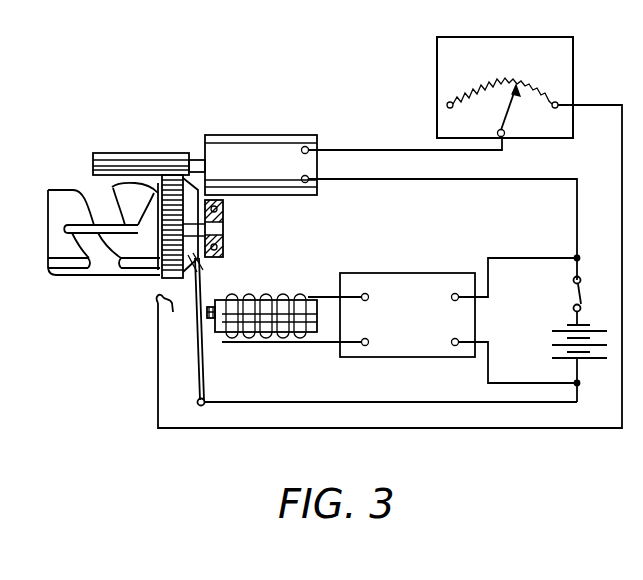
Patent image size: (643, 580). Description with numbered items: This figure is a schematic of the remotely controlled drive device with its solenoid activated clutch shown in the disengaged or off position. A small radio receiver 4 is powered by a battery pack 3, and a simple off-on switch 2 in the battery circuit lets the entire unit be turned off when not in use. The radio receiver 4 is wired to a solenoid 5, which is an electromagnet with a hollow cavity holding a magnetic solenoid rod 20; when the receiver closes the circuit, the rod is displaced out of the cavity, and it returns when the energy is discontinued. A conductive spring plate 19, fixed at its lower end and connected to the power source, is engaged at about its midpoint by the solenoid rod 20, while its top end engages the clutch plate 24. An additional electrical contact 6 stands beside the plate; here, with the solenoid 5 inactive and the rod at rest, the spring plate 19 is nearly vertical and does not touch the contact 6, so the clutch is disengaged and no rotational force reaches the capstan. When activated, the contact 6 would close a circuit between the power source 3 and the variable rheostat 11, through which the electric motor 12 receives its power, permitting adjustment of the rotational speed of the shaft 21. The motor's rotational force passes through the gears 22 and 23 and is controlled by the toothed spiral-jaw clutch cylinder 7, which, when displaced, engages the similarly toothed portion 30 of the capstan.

The off-on switch 2 is at (573, 294).
The battery pack 3 is at (595, 360).
The radio receiver 4 is at (415, 273).
The solenoid 5 is at (265, 304).
The electrical contact 6 is at (171, 323).
The toothed spiral-jaw clutch cylinder 7 is at (127, 272).
The variable rheostat 11 is at (576, 71).
The electric motor 12 is at (270, 135).
The spring plate 19 is at (205, 374).
The solenoid rod 20 is at (213, 300).
The shaft 21 is at (196, 160).
The gear 22 is at (150, 155).
The gear 23 is at (147, 270).
The clutch plate 24 is at (215, 241).
The toothed portion of capstan 30 is at (62, 190).